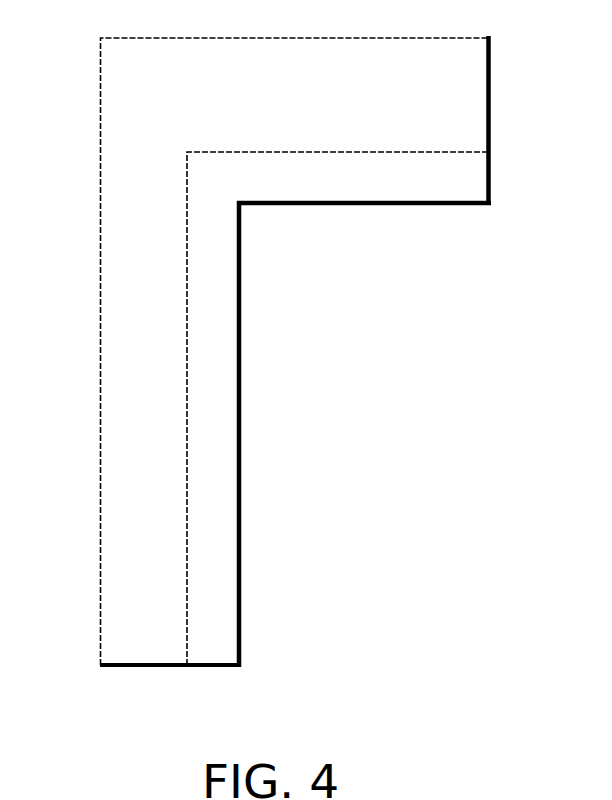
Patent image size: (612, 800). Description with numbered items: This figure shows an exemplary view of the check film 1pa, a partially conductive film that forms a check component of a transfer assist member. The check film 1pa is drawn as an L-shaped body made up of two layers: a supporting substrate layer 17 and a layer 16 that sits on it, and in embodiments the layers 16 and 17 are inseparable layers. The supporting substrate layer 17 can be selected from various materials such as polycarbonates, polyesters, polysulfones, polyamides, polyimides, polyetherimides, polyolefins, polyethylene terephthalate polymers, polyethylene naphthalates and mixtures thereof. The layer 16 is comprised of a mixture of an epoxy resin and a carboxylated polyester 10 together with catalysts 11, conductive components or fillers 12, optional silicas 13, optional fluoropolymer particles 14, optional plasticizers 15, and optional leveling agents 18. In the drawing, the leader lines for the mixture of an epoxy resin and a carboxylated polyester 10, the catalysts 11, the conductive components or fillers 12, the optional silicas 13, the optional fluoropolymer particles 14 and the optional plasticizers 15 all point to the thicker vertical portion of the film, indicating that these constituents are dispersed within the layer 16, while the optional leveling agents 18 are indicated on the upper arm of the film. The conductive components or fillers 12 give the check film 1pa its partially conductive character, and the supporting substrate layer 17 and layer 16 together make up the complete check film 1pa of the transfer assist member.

The check film 1pa is at (78, 327).
The mixture of an epoxy resin and a carboxylated polyester 10 is at (211, 556).
The catalysts 11 is at (211, 493).
The conductive components or fillers 12 is at (211, 430).
The optional silicas 13 is at (211, 367).
The optional fluoropolymer particles 14 is at (211, 305).
The optional plasticizers 15 is at (211, 243).
The layer 16 is at (212, 667).
The supporting substrate layer 17 is at (142, 667).
The optional leveling agents 18 is at (467, 177).